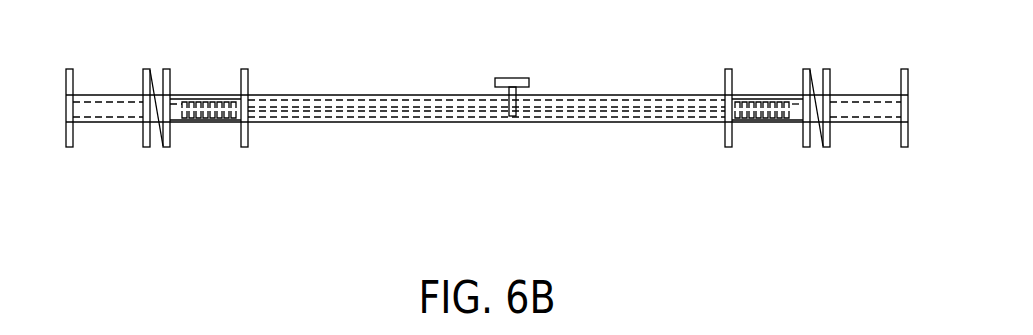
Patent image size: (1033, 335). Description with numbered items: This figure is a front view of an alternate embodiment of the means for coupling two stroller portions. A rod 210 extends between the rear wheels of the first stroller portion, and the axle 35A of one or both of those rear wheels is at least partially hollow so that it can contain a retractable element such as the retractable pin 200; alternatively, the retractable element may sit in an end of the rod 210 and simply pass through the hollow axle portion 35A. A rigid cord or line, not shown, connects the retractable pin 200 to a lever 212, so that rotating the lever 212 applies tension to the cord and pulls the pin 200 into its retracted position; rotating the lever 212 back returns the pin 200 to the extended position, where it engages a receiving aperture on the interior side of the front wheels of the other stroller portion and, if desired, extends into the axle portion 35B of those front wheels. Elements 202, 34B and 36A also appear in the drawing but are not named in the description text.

The retractable pin 200 is at (149, 107).
The spring 202 is at (198, 122).
The rod 210 is at (585, 122).
The lever 212 is at (513, 78).
The second clamp plate 34B is at (146, 162).
The axle of the rear wheels 35A is at (217, 93).
The axle portion of the front wheels 35B is at (100, 93).
The first clamp plate 36A is at (245, 162).